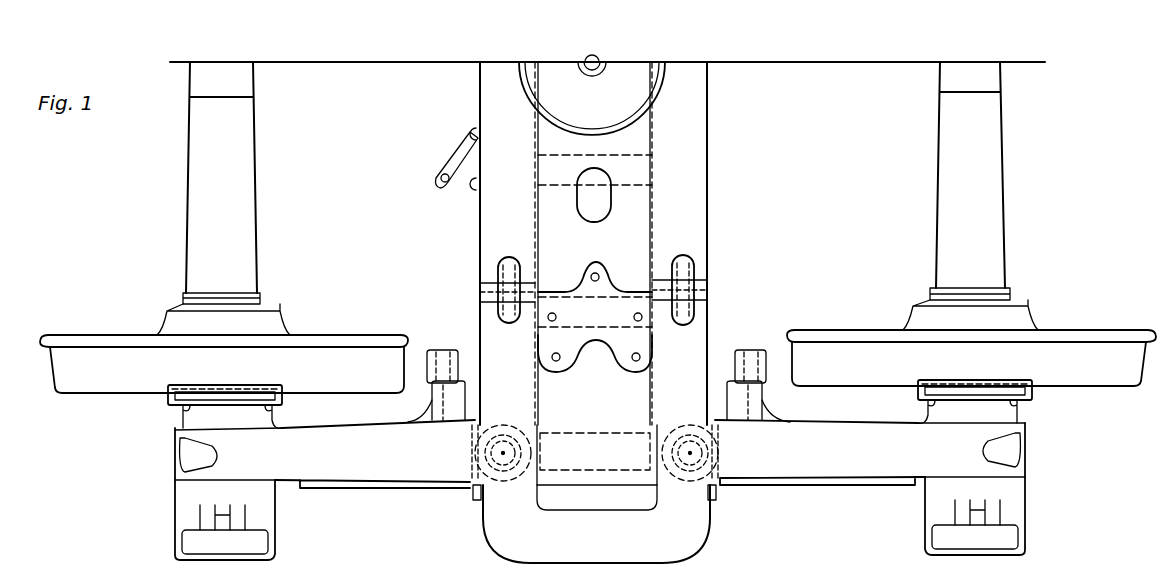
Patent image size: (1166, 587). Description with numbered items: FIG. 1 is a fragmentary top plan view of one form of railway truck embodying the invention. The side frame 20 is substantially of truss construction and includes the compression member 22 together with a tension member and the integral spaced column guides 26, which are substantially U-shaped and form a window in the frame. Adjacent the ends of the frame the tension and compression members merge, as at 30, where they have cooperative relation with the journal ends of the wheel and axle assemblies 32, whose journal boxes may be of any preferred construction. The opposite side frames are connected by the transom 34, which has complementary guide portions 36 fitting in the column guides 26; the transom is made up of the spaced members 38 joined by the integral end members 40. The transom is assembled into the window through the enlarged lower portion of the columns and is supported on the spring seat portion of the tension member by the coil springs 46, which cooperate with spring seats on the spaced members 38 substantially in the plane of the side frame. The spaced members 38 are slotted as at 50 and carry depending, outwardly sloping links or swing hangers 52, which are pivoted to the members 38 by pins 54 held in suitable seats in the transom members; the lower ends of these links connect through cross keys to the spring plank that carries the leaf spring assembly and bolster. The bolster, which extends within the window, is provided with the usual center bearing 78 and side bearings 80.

The side frame 20 is at (812, 478).
The compression member 22 is at (375, 454).
The column guides 26 is at (720, 464).
The merged end portions 30 is at (225, 472).
The wheel and axle assemblies 32 is at (90, 340).
The transom 34 is at (690, 140).
The guide portions 36 is at (718, 437).
The spaced members 38 is at (700, 198).
The end members 40 is at (555, 550).
The coil springs 46 is at (485, 465).
The slots 50 is at (690, 262).
The swing hangers 52 is at (497, 272).
The pins 54 is at (706, 288).
The center bearing 78 is at (522, 80).
The side bearings 80 is at (595, 204).